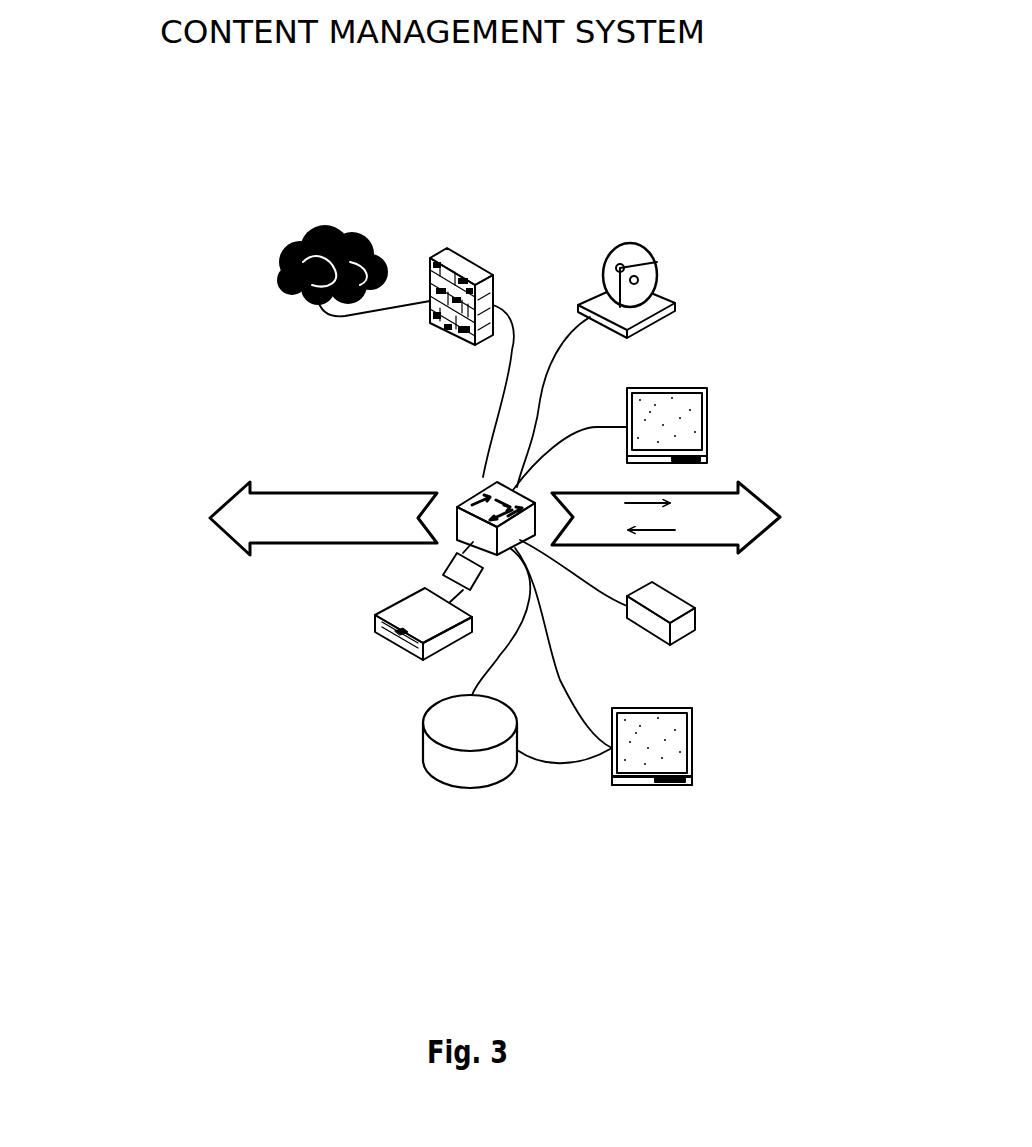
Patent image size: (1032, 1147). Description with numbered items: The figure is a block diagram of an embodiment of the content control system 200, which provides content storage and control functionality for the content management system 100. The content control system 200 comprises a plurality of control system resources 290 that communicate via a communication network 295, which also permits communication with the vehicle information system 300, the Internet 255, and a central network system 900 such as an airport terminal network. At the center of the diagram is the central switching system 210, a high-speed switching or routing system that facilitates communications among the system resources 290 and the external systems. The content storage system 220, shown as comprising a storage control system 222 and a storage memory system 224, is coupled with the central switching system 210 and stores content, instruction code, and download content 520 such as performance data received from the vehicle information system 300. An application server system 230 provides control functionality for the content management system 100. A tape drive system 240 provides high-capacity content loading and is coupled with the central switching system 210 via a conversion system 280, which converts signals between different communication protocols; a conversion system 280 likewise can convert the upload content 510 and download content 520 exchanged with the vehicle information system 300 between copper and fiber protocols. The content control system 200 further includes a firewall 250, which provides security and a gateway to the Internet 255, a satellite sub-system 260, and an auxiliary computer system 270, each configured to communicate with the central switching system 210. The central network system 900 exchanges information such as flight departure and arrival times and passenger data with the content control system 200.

The content management system 100 is at (775, 49).
The content control system 200 is at (497, 150).
The central switching system 210 is at (467, 488).
The content storage system 220 is at (417, 750).
The storage control system 222 is at (648, 793).
The storage memory system 224 is at (470, 795).
The application server system 230 is at (707, 438).
The tape drive system 240 is at (369, 624).
The firewall 250 is at (487, 290).
The Internet 255 is at (328, 250).
The satellite sub-system 260 is at (679, 282).
The auxiliary computer system 270 is at (698, 625).
The conversion system 280 is at (443, 568).
The control system resource 290 is at (452, 254).
The communication network 295 is at (498, 382).
The vehicle information system 300 is at (916, 548).
The upload content 510 is at (666, 503).
The download content 520 is at (668, 531).
The central network system 900 is at (157, 574).